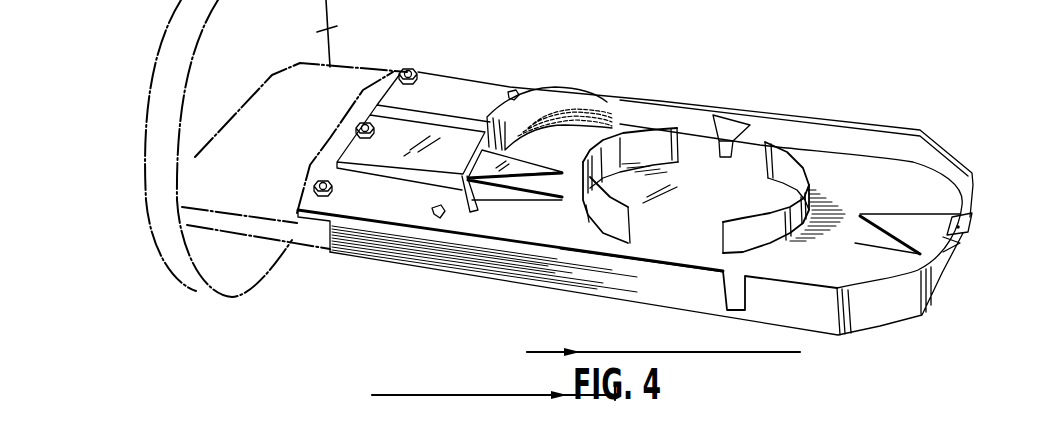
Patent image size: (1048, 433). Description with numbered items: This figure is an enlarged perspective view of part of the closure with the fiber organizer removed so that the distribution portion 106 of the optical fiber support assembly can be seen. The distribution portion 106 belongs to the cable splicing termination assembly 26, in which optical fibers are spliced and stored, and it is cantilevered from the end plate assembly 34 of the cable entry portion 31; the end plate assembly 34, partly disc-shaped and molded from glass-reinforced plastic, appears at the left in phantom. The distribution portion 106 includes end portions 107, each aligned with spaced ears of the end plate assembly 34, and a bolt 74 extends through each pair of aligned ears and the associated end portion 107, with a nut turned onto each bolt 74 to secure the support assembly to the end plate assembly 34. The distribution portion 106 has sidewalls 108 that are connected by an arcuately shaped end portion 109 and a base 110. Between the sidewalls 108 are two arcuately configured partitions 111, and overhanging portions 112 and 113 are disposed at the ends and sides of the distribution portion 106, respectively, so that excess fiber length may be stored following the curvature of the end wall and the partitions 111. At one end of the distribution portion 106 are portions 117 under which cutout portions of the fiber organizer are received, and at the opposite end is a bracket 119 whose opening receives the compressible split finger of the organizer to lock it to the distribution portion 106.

The cable splicing termination assembly 26 is at (529, 295).
The cable entry portion 31 is at (203, 291).
The end plate assembly 34 is at (320, 0).
The bolt 74 is at (414, 68).
The distribution portion 106 is at (815, 321).
The end portion 107 is at (377, 212).
The sidewall 108 is at (667, 288).
The arcuately shaped end portion 109 is at (488, 225).
The base 110 is at (707, 207).
The arcuately configured partition 111 is at (792, 160).
The overhanging portion 112 is at (885, 214).
The overhanging portion 113 is at (729, 114).
The portion 117 is at (436, 213).
The bracket 119 is at (966, 212).